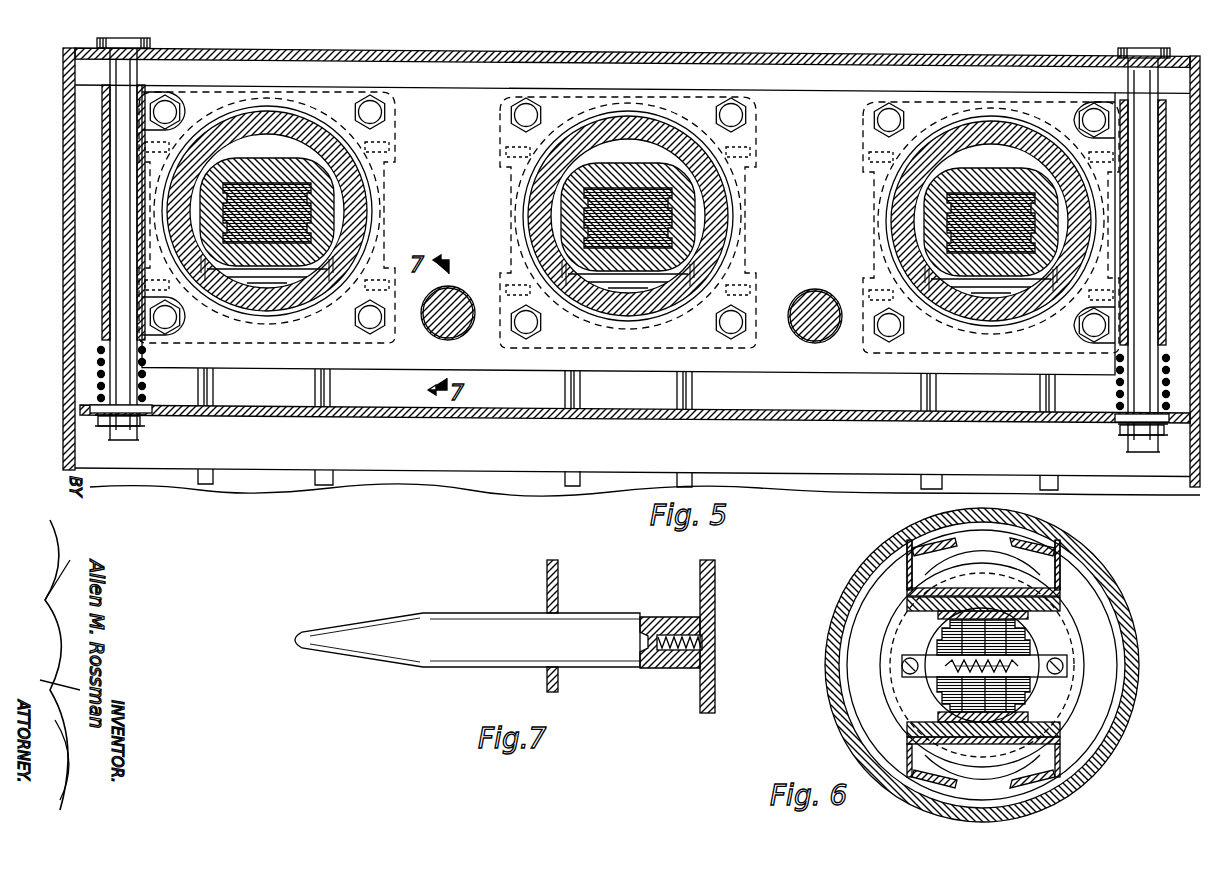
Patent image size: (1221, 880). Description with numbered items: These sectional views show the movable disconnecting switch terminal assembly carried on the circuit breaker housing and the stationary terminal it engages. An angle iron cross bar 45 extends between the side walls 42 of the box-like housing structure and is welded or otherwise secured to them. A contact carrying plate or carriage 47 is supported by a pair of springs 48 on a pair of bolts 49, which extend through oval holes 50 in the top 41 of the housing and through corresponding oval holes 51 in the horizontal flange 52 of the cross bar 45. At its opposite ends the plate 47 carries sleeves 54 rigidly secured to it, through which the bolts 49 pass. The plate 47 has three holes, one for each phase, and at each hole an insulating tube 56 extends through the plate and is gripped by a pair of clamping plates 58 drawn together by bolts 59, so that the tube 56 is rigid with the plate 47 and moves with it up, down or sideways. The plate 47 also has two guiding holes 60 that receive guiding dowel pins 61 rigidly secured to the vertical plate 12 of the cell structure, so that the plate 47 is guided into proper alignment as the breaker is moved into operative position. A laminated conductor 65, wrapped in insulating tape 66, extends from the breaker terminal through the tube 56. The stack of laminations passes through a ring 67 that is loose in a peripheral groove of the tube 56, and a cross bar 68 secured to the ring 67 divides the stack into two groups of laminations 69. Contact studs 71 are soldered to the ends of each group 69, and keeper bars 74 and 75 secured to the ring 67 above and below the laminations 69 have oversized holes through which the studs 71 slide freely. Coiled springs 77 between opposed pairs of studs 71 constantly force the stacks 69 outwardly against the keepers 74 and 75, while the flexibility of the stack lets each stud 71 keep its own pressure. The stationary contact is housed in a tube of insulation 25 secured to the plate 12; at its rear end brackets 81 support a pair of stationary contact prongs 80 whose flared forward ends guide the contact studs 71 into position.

In FIG. 7, the vertical plate 12 is at (715, 684).
In FIG. 6, the tube of insulation 25 is at (1137, 680).
In FIG. 5, the top 41 is at (930, 57).
In FIG. 5, the side walls 42 is at (63, 303).
In FIG. 5, the angle iron cross bar 45 is at (362, 466).
In FIG. 5, the contact carrying plate 47 is at (451, 88).
In FIG. 7, the contact carrying plate 47 is at (560, 570).
In FIG. 5, the springs 48 is at (98, 364).
In FIG. 5, the bolts 49 is at (110, 74).
In FIG. 5, the oval holes 50 is at (150, 48).
In FIG. 5, the oval holes 51 is at (142, 420).
In FIG. 5, the horizontal flange 52 is at (166, 386).
In FIG. 5, the sleeves 54 is at (102, 156).
In FIG. 5, the insulating tube 56 is at (370, 210).
In FIG. 6, the insulating tube 56 is at (860, 572).
In FIG. 5, the clamping plates 58 is at (383, 96).
In FIG. 5, the bolts 59 is at (386, 183).
In FIG. 5, the guiding holes 60 is at (468, 333).
In FIG. 7, the guiding holes 60 is at (560, 613).
In FIG. 5, the guiding dowel pins 61 is at (476, 300).
In FIG. 7, the guiding dowel pins 61 is at (478, 652).
In FIG. 5, the laminated conductor 65 is at (255, 192).
In FIG. 5, the insulating tape 66 is at (306, 170).
In FIG. 6, the ring 67 is at (1050, 615).
In FIG. 6, the cross bar 68 is at (1028, 718).
In FIG. 6, the groups of laminations 69 is at (1030, 640).
In FIG. 6, the contact studs 71 is at (1045, 680).
In FIG. 6, the keeper bar 74 is at (1030, 590).
In FIG. 6, the keeper bar 75 is at (1050, 745).
In FIG. 6, the coiled springs 77 is at (945, 660).
In FIG. 6, the stationary contact prongs 80 is at (1058, 600).
In FIG. 6, the brackets 81 is at (1035, 540).